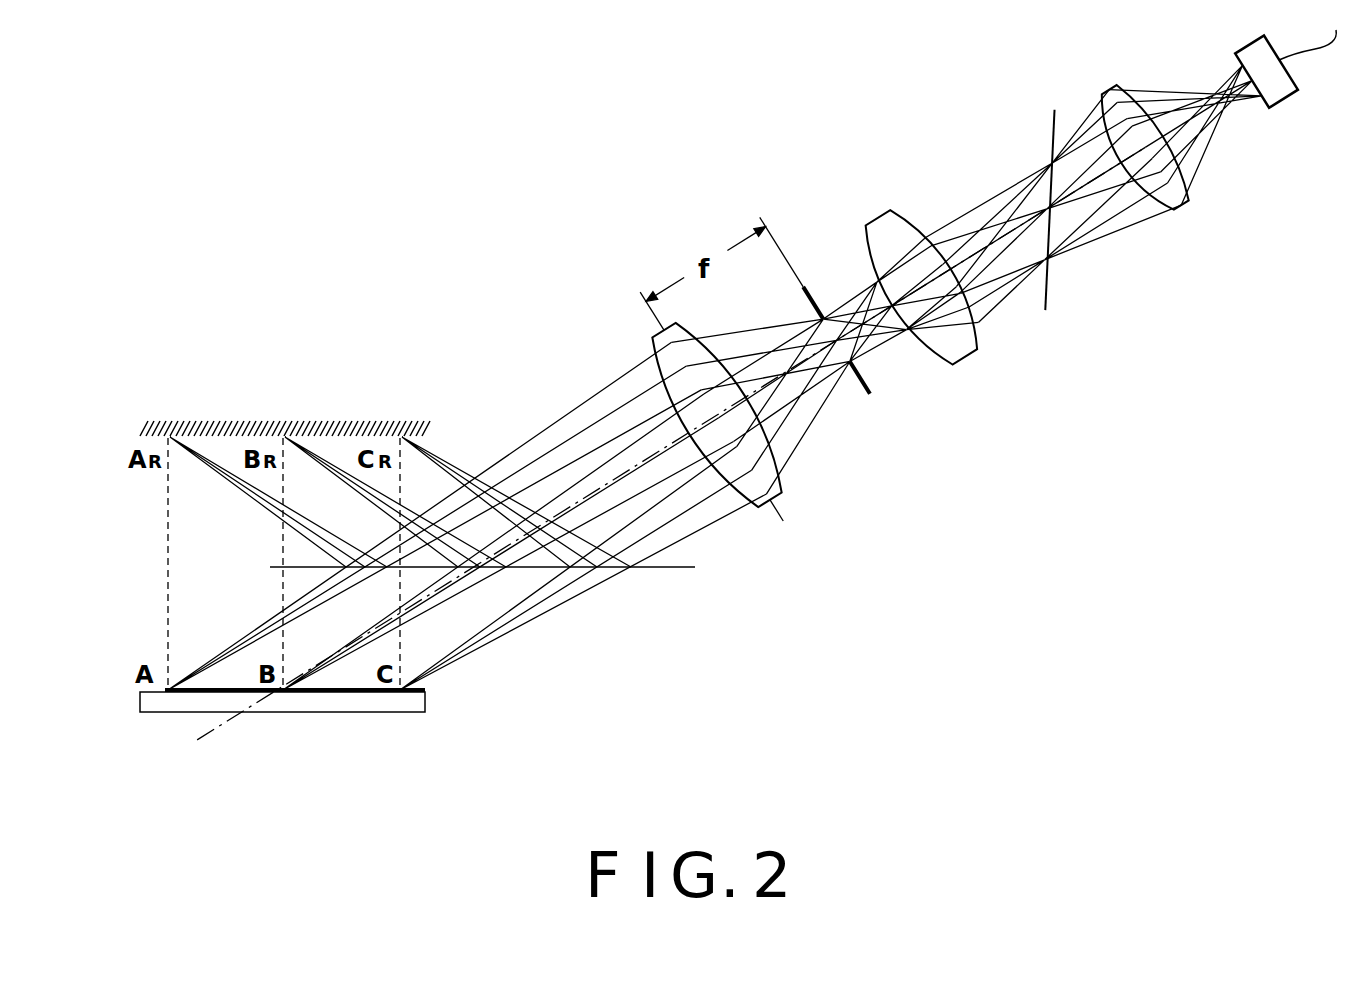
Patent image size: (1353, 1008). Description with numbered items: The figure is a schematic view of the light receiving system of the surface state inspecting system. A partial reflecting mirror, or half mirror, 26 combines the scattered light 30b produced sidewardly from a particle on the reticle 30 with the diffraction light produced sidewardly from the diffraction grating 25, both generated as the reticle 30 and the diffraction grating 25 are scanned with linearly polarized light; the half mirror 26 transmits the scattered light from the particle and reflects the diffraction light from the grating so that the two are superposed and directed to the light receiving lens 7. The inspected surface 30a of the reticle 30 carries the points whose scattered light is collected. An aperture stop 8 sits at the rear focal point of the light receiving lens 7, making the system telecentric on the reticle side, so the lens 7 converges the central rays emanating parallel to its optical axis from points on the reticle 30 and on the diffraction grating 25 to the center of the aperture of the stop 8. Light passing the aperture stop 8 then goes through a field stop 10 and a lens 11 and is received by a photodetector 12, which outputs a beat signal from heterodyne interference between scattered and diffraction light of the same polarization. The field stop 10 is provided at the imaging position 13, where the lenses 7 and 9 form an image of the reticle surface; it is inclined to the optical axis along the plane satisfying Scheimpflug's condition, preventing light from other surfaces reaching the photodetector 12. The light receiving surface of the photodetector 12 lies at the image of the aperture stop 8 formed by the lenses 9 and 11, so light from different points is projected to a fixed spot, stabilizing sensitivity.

The light receiving lens 7 is at (752, 511).
The aperture stop 8 is at (862, 393).
The lens 9 is at (966, 368).
The field stop 10 is at (1046, 305).
The lens 11 is at (1178, 215).
The photodetector 12 is at (1284, 105).
The imaging position 13 is at (1050, 230).
The diffraction grating 25 is at (205, 420).
The partial reflecting mirror 26 is at (688, 567).
The reticle 30 is at (413, 712).
The reflecting surface of plate 30a is at (342, 692).
The scattered light 30b is at (530, 617).